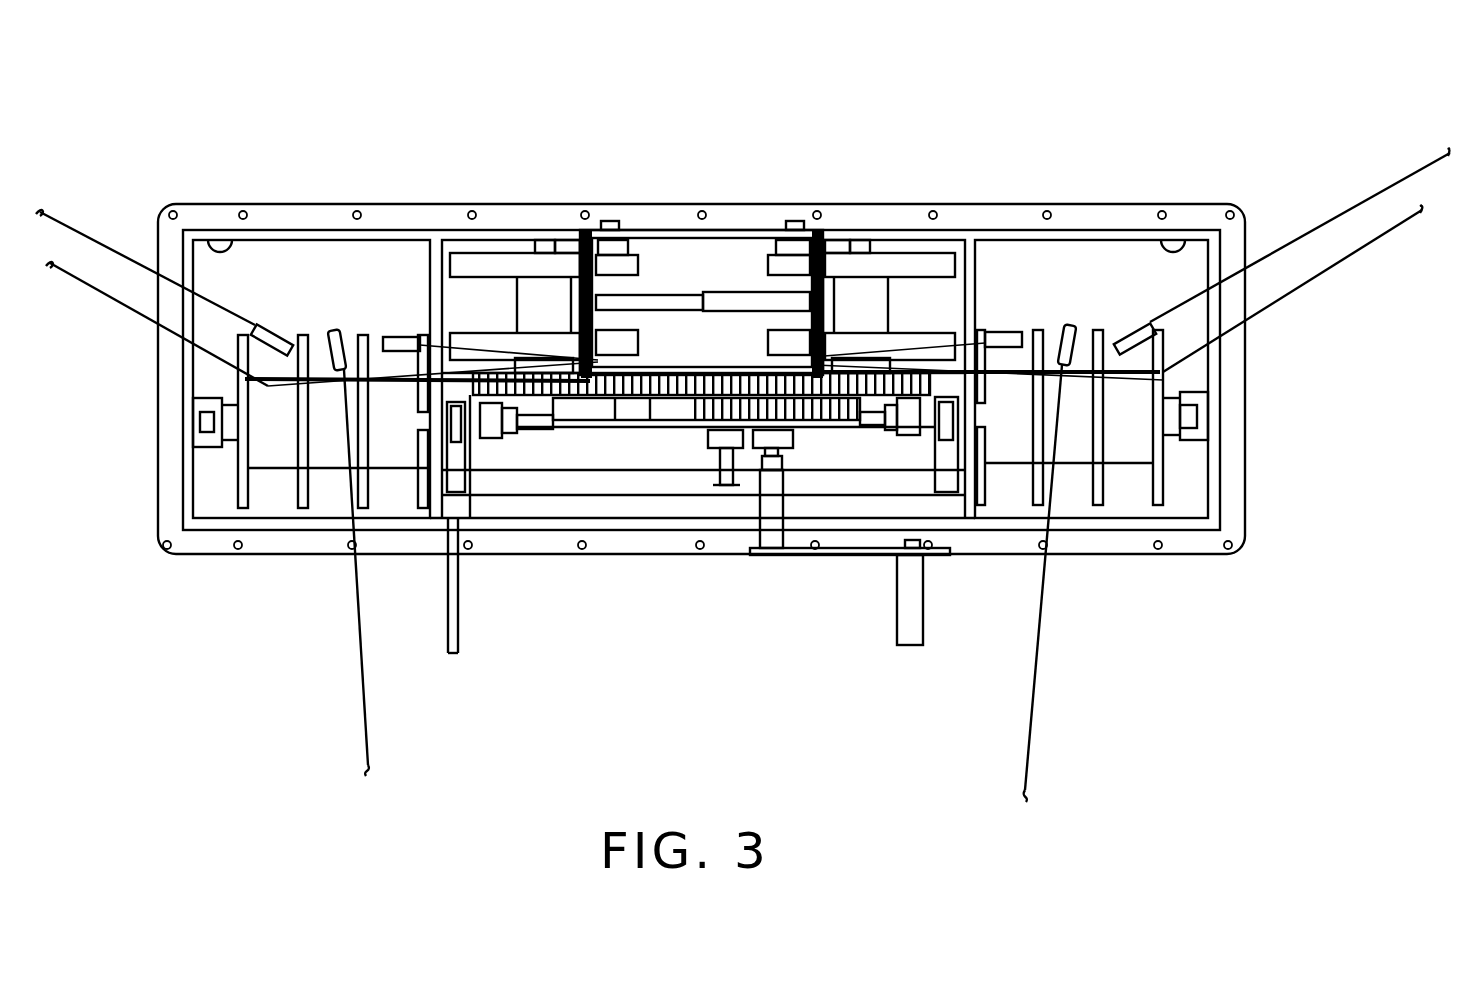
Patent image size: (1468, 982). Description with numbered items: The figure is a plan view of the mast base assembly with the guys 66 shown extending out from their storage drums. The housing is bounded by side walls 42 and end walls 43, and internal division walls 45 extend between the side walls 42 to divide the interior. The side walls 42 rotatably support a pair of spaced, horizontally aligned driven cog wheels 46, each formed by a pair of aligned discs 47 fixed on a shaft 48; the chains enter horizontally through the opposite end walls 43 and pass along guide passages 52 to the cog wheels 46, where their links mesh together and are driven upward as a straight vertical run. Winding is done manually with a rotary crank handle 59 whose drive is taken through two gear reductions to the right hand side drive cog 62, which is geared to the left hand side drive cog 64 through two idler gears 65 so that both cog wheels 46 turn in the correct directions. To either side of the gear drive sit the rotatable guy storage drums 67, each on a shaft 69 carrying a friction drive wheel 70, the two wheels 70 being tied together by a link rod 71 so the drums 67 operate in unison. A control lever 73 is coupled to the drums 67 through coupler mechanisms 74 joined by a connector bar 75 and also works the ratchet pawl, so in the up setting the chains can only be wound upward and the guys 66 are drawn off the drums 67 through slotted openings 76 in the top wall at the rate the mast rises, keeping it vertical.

The side walls 42 is at (1128, 228).
The end walls 43 is at (188, 457).
The internal division walls 45 is at (432, 262).
The driven cog wheels 46 is at (519, 232).
The discs 47 is at (493, 265).
The shaft 48 is at (548, 300).
The guide passages 52 is at (208, 248).
The rotary crank handle 59 is at (797, 555).
The right hand side drive cog 62 is at (873, 383).
The left hand side drive cog 64 is at (527, 392).
The idler gears 65 is at (634, 393).
The guys 66 is at (92, 282).
The guy storage drums 67 is at (237, 473).
The shaft 69 is at (200, 420).
The friction drive wheels 70 is at (493, 438).
The link rod 71 is at (606, 394).
The control lever 73 is at (460, 637).
The coupler mechanisms 74 is at (445, 490).
The connector bar 75 is at (677, 487).
The slotted openings 76 is at (388, 338).